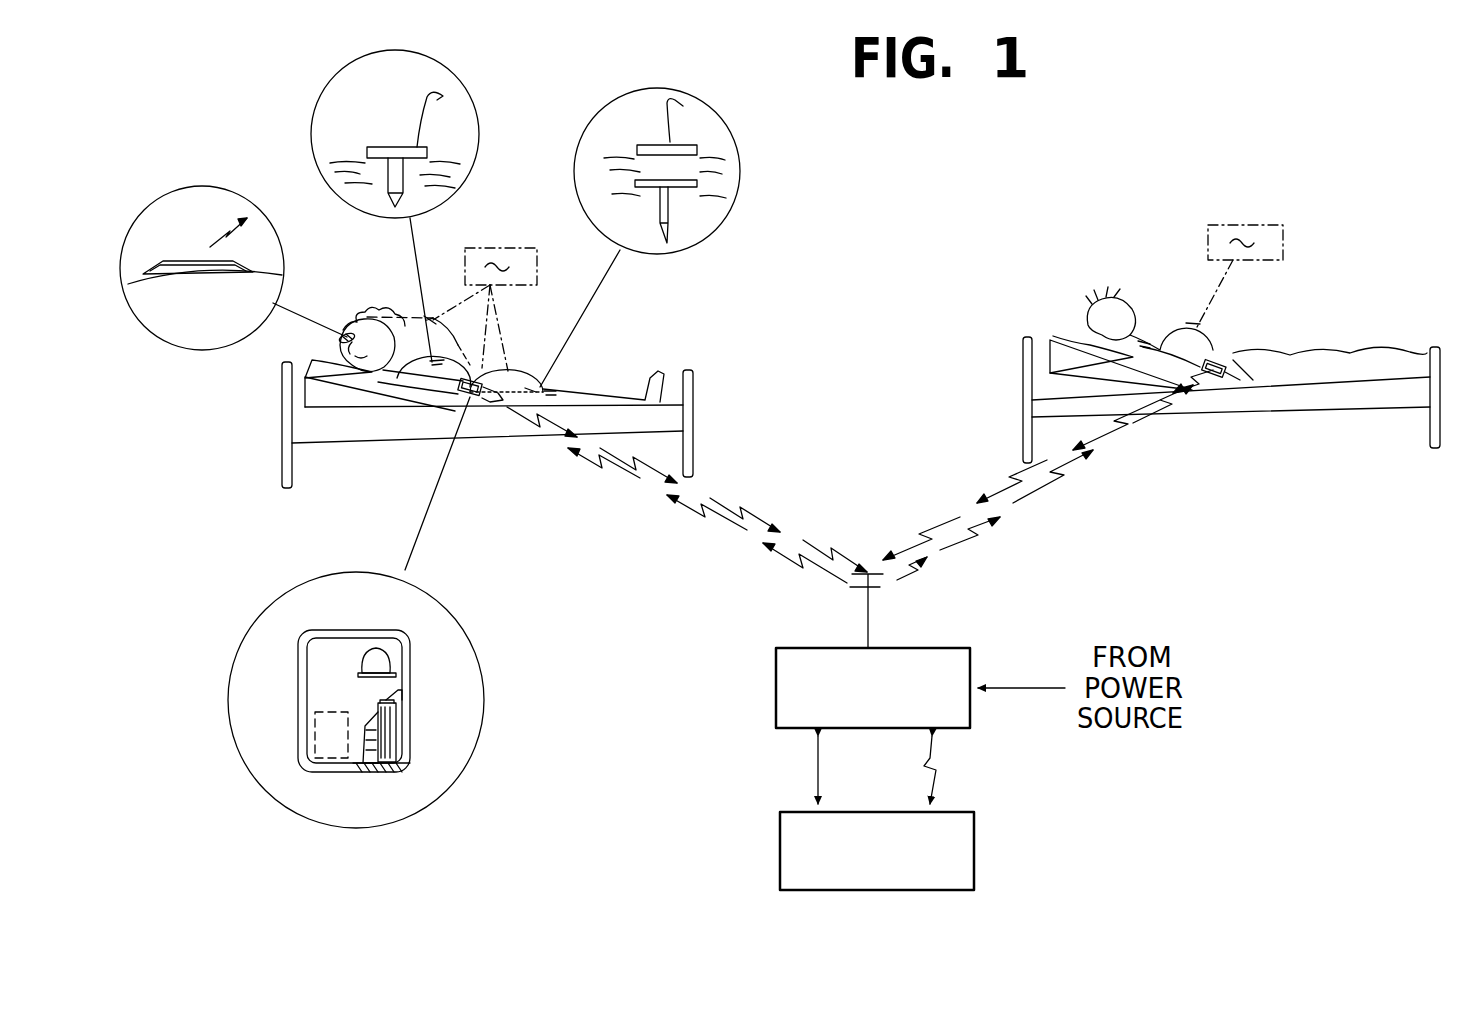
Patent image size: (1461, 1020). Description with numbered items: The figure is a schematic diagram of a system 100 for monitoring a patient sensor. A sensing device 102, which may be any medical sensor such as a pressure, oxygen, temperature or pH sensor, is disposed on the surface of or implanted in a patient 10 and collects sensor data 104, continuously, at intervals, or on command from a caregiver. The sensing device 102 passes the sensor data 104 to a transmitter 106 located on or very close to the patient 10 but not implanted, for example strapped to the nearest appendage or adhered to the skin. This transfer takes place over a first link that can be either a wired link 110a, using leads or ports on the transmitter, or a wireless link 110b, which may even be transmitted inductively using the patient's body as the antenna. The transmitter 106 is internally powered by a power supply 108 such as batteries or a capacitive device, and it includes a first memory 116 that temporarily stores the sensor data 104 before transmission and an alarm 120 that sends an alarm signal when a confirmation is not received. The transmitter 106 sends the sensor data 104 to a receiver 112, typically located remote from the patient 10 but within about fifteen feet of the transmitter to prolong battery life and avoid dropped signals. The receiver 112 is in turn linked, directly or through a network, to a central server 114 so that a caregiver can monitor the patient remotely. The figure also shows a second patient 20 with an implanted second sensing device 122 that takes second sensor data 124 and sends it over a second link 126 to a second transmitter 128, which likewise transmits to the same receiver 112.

The patient 10 is at (328, 350).
The second patient 20 is at (1080, 312).
The system 100 is at (775, 465).
The sensing device 102 is at (345, 335).
The sensor data 104 is at (527, 250).
The transmitter 106 is at (480, 400).
The power supply 108 is at (410, 727).
The wired link 110a is at (530, 390).
The wireless link 110b is at (430, 320).
The receiver 112 is at (782, 689).
The central server 114 is at (968, 835).
The first memory 116 is at (302, 727).
The alarm 120 is at (378, 660).
The second sensing device 122 is at (1143, 343).
The second sensor data 124 is at (1218, 238).
The second link 126 is at (1196, 326).
The second transmitter 128 is at (1233, 356).